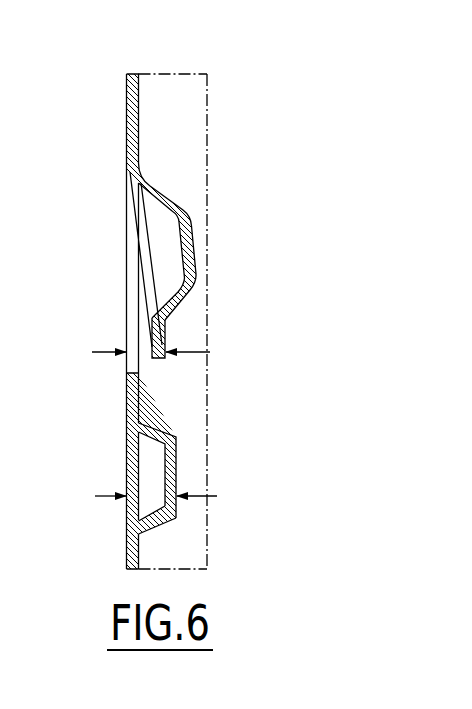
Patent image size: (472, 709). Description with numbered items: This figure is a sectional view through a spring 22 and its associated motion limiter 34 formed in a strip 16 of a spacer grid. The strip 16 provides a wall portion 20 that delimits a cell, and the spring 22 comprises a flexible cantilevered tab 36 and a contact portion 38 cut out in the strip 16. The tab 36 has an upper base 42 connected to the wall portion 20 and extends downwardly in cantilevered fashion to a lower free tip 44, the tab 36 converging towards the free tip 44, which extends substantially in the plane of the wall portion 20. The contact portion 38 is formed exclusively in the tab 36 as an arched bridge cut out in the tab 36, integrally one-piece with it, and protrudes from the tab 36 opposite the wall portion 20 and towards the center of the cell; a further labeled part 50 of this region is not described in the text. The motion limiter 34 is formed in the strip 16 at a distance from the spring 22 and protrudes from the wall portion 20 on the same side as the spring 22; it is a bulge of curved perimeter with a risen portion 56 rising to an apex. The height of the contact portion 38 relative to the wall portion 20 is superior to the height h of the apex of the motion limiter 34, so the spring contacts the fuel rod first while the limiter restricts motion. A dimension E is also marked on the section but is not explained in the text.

The strip 16 is at (180, 293).
The wall portion 20 is at (132, 96).
The upper base 42 is at (132, 168).
The flexible cantilevered tab 36 is at (135, 281).
The arm 50 is at (193, 234).
The contact portion 38 is at (221, 276).
The lower free tip 44 is at (169, 352).
The motion limiter 34 is at (186, 479).
The risen portion 56 is at (168, 522).
The spring 22 is at (263, 170).
The thickness E is at (143, 351).
The height of the apex of the motion limiter h is at (152, 495).